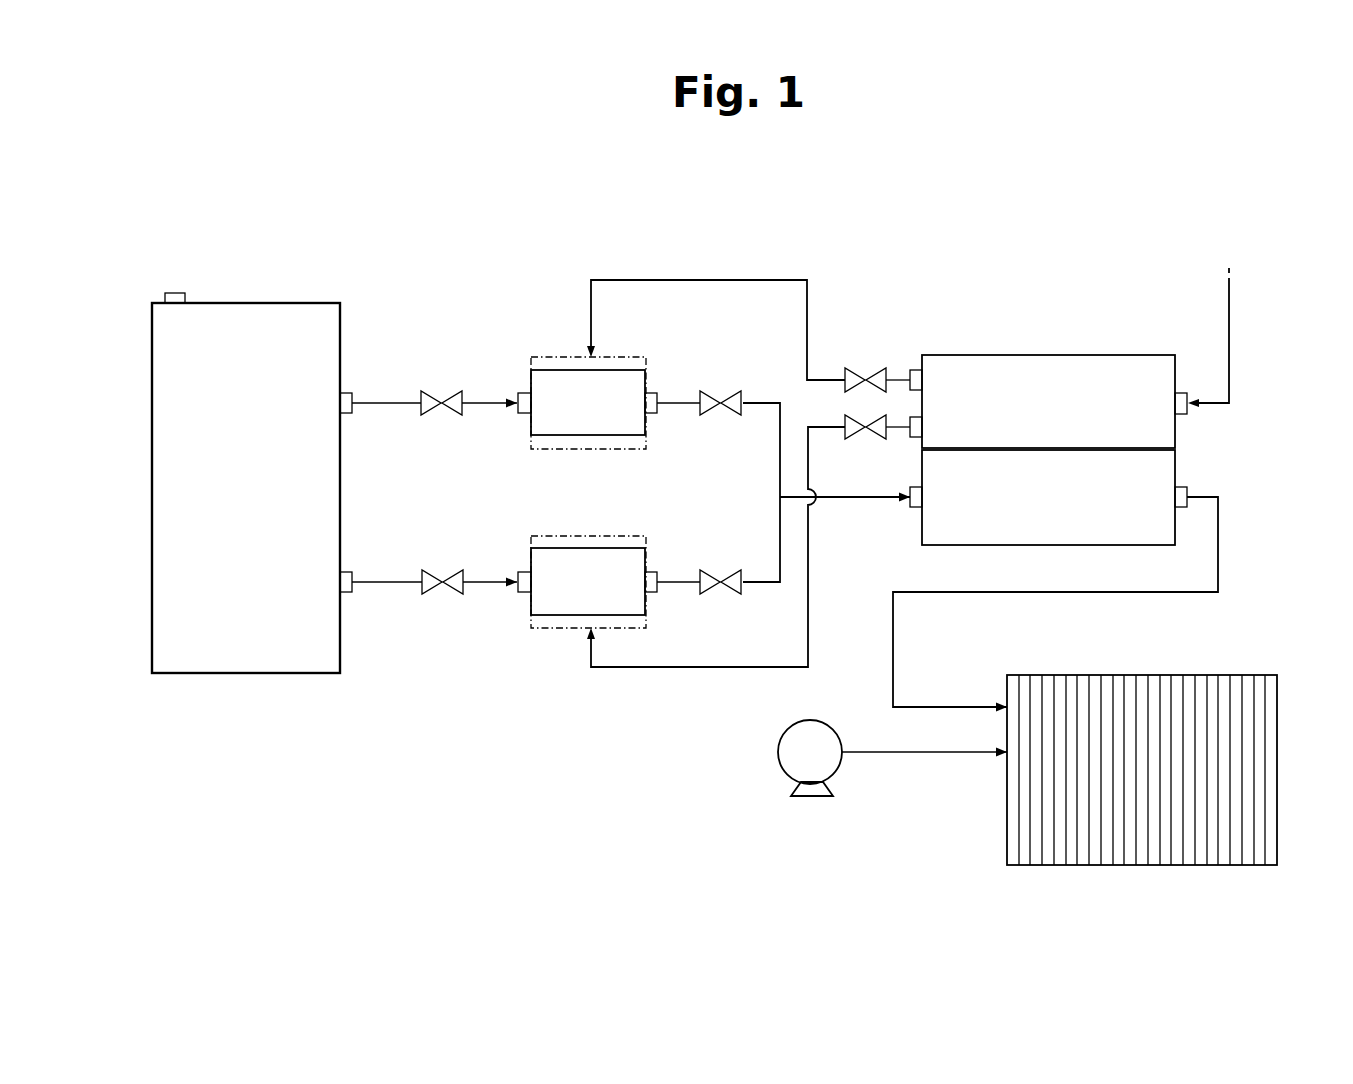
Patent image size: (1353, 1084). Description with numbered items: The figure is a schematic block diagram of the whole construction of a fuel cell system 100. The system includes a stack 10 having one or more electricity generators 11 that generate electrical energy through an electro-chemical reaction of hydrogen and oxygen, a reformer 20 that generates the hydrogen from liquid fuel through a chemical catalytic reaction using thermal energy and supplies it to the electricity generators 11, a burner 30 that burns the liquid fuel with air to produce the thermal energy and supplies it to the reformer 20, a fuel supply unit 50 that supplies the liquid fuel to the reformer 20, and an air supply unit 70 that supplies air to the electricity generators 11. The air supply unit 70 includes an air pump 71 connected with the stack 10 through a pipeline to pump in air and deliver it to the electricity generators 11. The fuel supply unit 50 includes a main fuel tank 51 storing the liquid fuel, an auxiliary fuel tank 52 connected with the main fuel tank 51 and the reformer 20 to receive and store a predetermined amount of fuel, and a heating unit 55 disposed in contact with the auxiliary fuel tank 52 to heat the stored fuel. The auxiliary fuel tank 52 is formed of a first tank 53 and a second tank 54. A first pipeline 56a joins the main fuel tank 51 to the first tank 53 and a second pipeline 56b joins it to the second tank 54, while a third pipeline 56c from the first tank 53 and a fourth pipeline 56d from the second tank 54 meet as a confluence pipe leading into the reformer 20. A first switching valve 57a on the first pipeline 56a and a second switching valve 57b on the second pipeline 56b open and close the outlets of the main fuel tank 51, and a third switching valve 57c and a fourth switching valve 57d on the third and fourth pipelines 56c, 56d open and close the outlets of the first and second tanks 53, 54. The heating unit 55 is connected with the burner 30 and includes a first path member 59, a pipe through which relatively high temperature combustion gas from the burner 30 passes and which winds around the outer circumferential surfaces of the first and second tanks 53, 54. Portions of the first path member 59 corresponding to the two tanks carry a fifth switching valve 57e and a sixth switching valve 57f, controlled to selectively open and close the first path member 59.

The fuel cell system 100 is at (742, 185).
The stack 10 is at (1235, 655).
The electricity generators 11 is at (1058, 865).
The reformer 20 is at (1060, 545).
The burner 30 is at (1057, 355).
The fuel supply unit 50 is at (494, 680).
The main fuel tank 51 is at (251, 303).
The auxiliary fuel tank 52 is at (594, 466).
The first tank 53 is at (626, 370).
The second tank 54 is at (627, 548).
The heating unit 55 is at (722, 280).
The first pipeline 56a is at (392, 403).
The second pipeline 56b is at (392, 582).
The third pipeline 56c is at (680, 403).
The fourth pipeline 56d is at (678, 582).
The first switching valve 57a is at (462, 392).
The second switching valve 57b is at (463, 572).
The third switching valve 57c is at (742, 392).
The fourth switching valve 57d is at (742, 572).
The fifth switching valve 57e is at (860, 360).
The sixth switching valve 57f is at (855, 438).
The first path member 59 is at (588, 492).
The air supply unit 70 is at (860, 784).
The air pump 71 is at (820, 720).